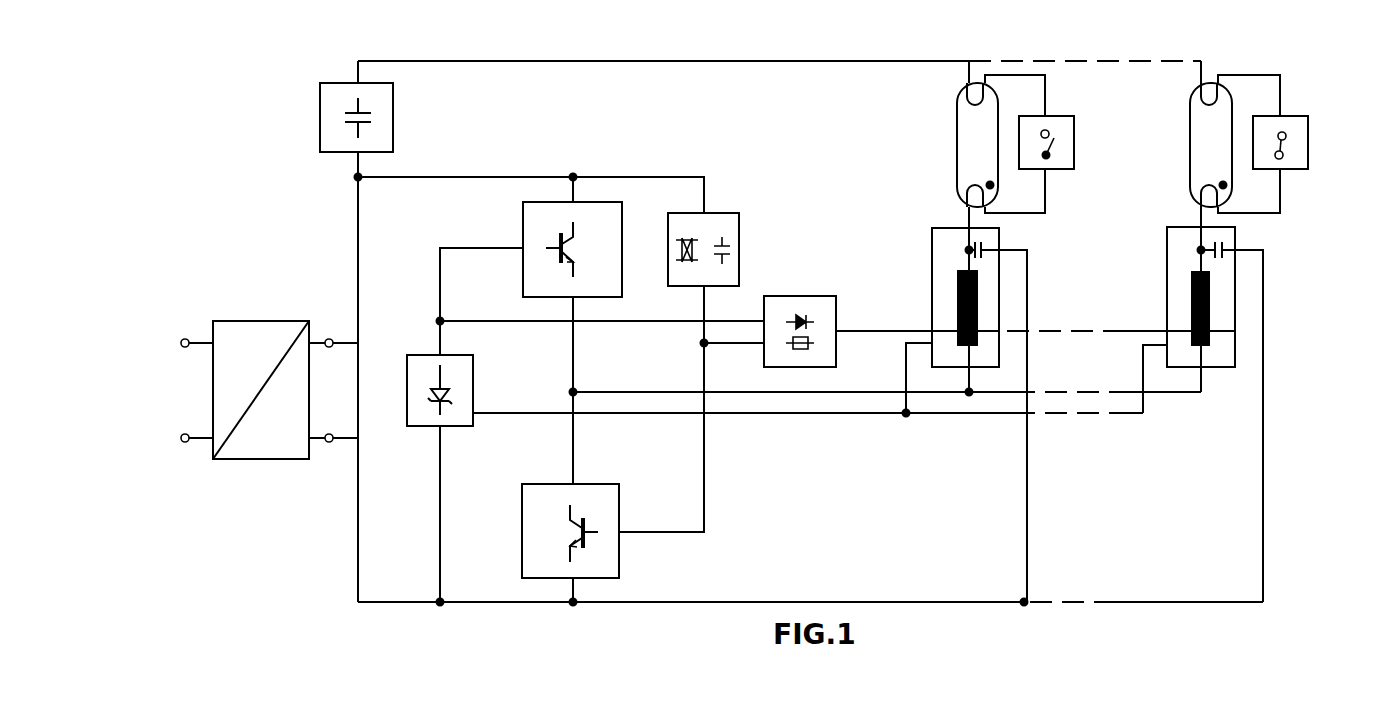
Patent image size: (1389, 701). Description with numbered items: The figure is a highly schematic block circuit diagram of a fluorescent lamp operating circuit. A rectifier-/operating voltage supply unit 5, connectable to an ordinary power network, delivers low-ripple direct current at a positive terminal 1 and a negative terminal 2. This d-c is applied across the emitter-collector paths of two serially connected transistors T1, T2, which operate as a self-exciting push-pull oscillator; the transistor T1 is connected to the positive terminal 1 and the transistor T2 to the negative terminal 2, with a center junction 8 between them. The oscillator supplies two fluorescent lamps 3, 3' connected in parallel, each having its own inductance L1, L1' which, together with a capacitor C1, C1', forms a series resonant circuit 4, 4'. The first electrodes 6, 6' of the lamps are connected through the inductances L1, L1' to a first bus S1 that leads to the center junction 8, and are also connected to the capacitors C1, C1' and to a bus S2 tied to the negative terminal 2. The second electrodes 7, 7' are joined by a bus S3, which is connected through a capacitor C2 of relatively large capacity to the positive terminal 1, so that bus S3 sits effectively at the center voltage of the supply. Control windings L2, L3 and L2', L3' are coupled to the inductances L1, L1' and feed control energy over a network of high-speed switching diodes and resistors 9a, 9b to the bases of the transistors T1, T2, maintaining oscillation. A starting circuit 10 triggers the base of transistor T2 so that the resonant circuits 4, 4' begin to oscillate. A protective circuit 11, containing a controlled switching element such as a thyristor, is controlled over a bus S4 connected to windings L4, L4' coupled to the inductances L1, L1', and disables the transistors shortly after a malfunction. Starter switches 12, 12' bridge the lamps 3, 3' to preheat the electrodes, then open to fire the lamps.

The positive terminal 1 is at (333, 339).
The negative terminal 2 is at (333, 441).
The fluorescent lamp 3 is at (925, 134).
The fluorescent lamp 3' is at (1172, 145).
The series resonant circuit 4 is at (991, 299).
The series resonant circuit 4' is at (1233, 310).
The rectifier-/operating voltage supply unit 5 is at (215, 477).
The first electrode 6 is at (980, 186).
The first electrode 6' is at (1214, 186).
The second electrode 7 is at (975, 107).
The second electrode 7' is at (1210, 107).
The center junction 8 is at (574, 390).
The diode 9a is at (800, 320).
The resistor 9b is at (800, 320).
The starting circuit 10 is at (741, 214).
The protective circuit 11 is at (453, 390).
The starter switch 12 is at (1064, 144).
The starter switch 12' is at (1298, 144).
The capacitor C1 is at (998, 412).
The capacitor C1' is at (1234, 412).
The capacitor C2 is at (370, 117).
The inductance L1 is at (935, 308).
The inductance L1' is at (1171, 308).
The control winding L2 is at (1033, 302).
The control winding L3 is at (1033, 302).
The control winding L2' is at (1271, 302).
The control winding L3' is at (1271, 302).
The winding L4 is at (1017, 350).
The winding L4' is at (1256, 350).
The first bus S1 is at (812, 413).
The third bus S2 is at (798, 602).
The bus S3 is at (645, 61).
The bus S4 is at (740, 413).
The transistor T1 is at (559, 249).
The transistor T2 is at (557, 531).